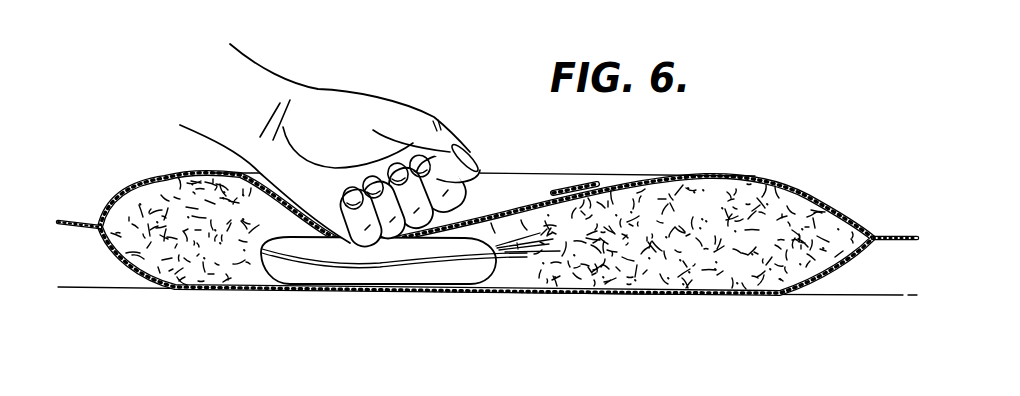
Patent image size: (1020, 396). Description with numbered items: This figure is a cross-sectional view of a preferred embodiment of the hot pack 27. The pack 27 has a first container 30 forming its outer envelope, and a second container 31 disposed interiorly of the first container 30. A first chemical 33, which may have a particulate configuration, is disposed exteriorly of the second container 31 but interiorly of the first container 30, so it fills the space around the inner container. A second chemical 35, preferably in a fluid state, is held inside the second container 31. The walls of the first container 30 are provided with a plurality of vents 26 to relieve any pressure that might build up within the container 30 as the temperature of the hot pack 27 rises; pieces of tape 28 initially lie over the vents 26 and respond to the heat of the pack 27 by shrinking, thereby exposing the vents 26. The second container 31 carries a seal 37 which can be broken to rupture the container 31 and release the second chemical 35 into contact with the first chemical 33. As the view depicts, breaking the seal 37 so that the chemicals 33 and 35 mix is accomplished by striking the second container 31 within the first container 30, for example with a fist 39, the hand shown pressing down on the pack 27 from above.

The vents 26 is at (577, 190).
The hot pack 27 is at (624, 167).
The pieces of tape 28 is at (577, 190).
The first container 30 is at (688, 177).
The second container 31 is at (306, 273).
The first chemical 33 is at (764, 197).
The second chemical 35 is at (397, 273).
The seal 37 is at (513, 263).
The fist 39 is at (352, 80).